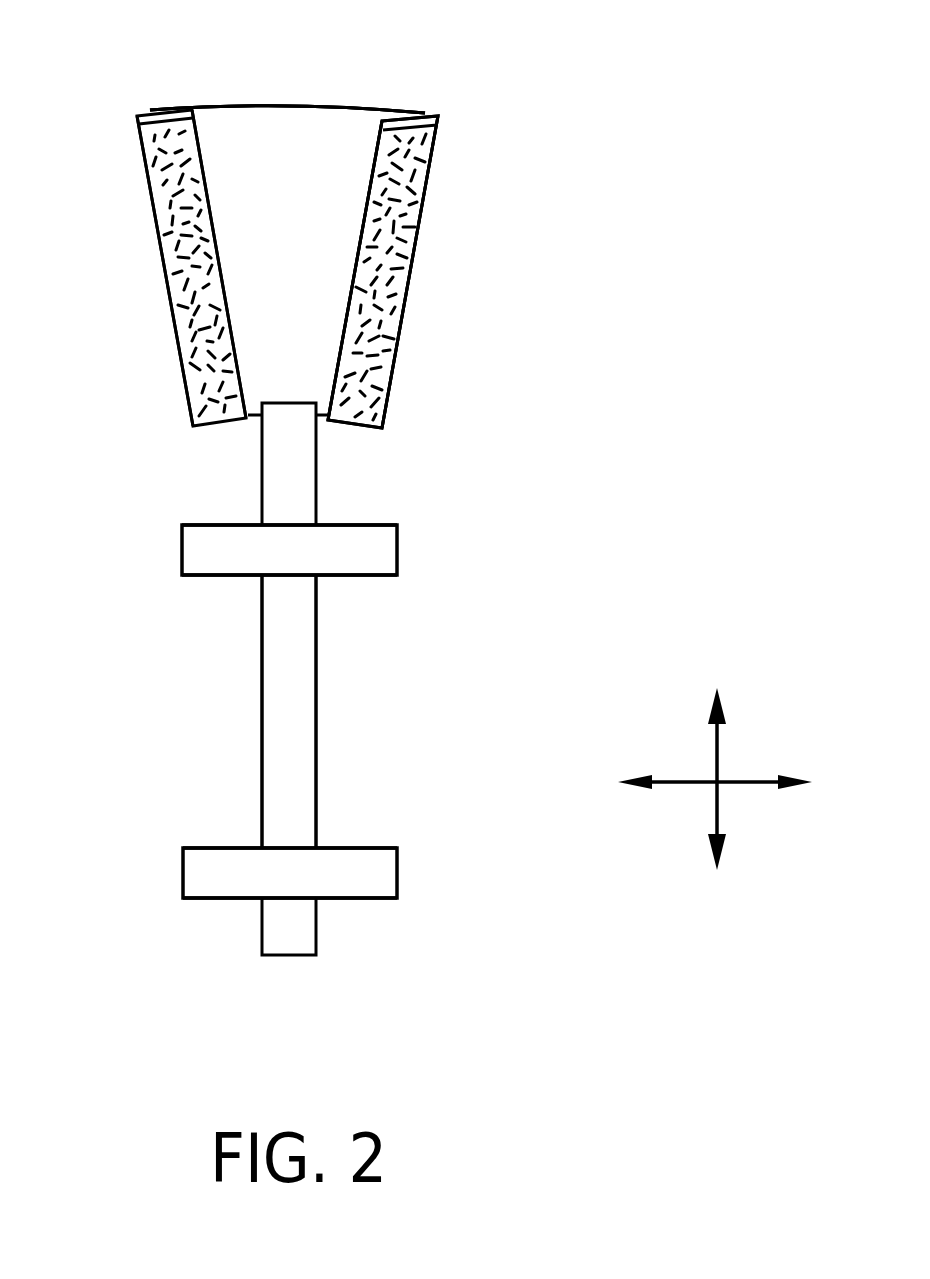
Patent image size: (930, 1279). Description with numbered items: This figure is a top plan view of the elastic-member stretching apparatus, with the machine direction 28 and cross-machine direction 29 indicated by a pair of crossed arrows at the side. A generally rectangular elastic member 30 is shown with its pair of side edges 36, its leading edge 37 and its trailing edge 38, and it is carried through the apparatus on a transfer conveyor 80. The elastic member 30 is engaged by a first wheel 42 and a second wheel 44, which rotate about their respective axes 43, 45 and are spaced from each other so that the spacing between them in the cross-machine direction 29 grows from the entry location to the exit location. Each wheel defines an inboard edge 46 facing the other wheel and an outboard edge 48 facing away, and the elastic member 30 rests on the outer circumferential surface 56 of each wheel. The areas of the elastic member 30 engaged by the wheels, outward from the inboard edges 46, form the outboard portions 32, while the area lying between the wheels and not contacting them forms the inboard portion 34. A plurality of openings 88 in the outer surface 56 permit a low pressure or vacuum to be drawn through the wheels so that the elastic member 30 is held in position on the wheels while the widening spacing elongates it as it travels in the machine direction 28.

The machine direction 28 is at (720, 750).
The cross-machine direction 29 is at (747, 785).
The elastic member 30 is at (252, 104).
The outboard portions 32 is at (150, 110).
The inboard portion 34 is at (320, 103).
The side edges 36 is at (182, 552).
The leading edge 37 is at (348, 525).
The trailing edge 38 is at (383, 578).
The first wheel 42 is at (190, 128).
The axis 43 is at (252, 263).
The second wheel 44 is at (425, 113).
The axis 45 is at (317, 258).
The inboard edges 46 is at (203, 185).
The outboard edges 48 is at (185, 378).
The outer circumferential surface 56 is at (397, 303).
The transfer conveyor 80 is at (300, 717).
The openings 88 is at (405, 208).